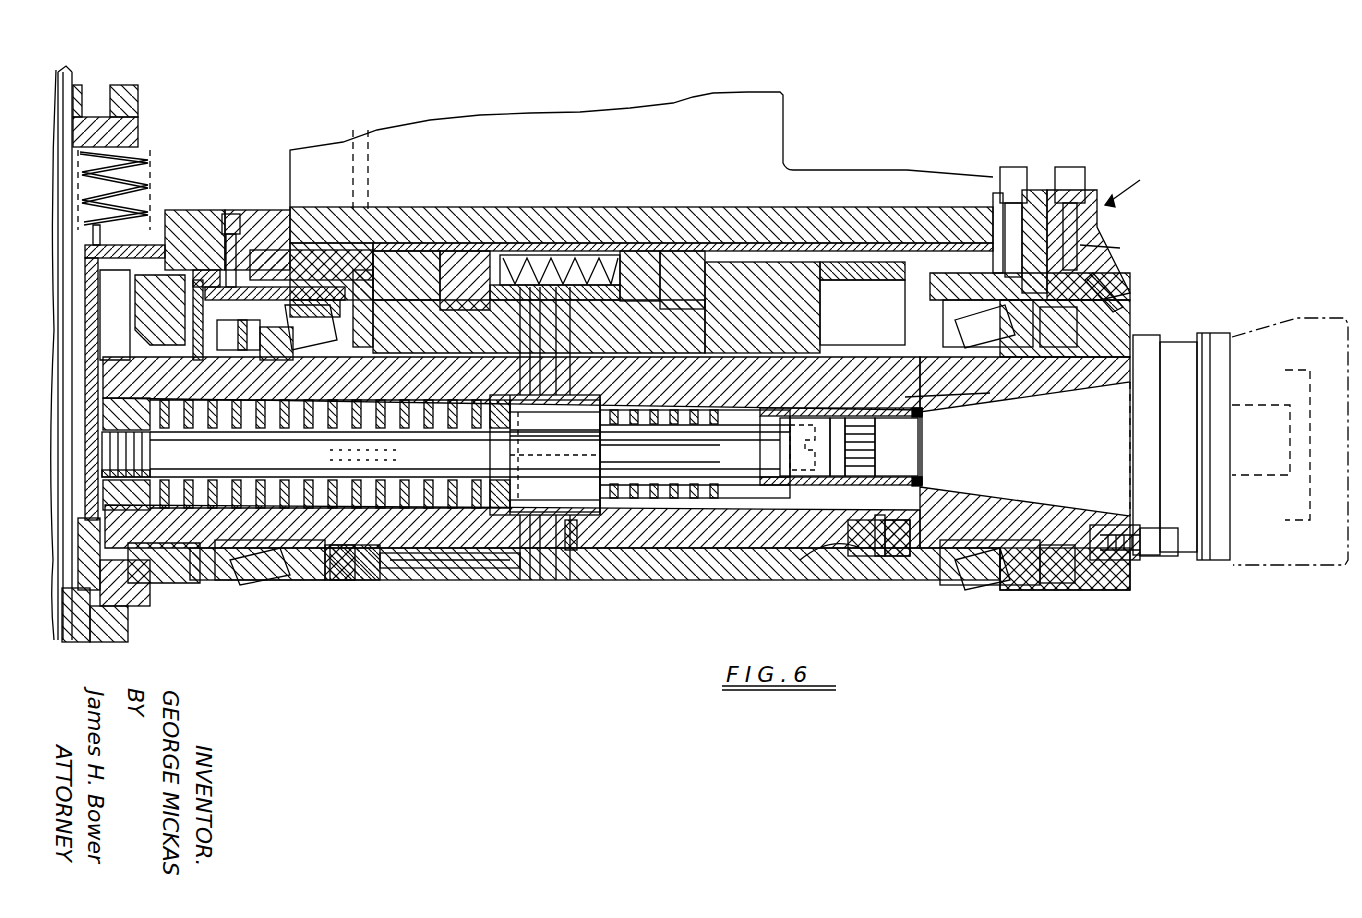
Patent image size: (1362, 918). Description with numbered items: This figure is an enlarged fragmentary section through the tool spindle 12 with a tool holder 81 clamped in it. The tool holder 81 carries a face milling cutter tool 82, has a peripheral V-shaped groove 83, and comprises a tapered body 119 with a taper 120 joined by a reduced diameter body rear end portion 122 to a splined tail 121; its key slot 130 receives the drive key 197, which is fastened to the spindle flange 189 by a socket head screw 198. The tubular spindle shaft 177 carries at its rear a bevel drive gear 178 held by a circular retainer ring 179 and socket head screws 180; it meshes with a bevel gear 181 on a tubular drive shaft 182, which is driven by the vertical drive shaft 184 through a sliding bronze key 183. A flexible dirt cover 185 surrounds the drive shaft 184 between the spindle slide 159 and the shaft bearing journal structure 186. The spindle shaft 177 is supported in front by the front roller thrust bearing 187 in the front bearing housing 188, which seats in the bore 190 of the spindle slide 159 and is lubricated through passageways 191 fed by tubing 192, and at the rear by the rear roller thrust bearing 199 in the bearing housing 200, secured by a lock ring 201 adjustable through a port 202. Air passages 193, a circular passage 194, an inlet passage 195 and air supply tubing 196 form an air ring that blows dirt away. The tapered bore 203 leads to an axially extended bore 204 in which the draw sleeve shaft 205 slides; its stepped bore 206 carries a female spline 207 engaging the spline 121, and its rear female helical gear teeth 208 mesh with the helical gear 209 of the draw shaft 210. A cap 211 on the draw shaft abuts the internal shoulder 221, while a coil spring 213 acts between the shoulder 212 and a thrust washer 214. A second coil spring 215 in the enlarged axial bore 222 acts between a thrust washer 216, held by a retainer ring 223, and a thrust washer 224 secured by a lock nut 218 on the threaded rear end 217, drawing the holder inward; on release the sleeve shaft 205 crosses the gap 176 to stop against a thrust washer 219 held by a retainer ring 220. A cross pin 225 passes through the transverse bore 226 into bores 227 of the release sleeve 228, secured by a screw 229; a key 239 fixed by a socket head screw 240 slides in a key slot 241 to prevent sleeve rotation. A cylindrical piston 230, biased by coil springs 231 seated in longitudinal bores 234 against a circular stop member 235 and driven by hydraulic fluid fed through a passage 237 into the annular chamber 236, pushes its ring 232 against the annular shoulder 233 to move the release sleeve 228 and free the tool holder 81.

The tool spindle 12 is at (1138, 182).
The tool holder 81 is at (1215, 335).
The face milling cutter tool 82 is at (1298, 325).
The V-shaped groove 83 is at (1160, 335).
The tapered body 119 is at (1076, 449).
The taper 120 is at (990, 393).
The splined tail 121 is at (870, 450).
The body rear end portion 122 is at (910, 435).
The key slot 130 is at (1120, 490).
The spindle slide 159 is at (760, 135).
The gap 176 is at (905, 444).
The tubular spindle shaft 177 is at (690, 580).
The bevel drive gear 178 is at (190, 575).
The circular retainer ring 179 is at (120, 330).
The socket head screws 180 is at (155, 300).
The bevel gear 181 is at (140, 600).
The tubular drive shaft 182 is at (120, 640).
The bronze key 183 is at (75, 640).
The vertical drive shaft 184 is at (80, 70).
The flexible dirt cover 185 is at (148, 160).
The shaft bearing journal structure 186 is at (125, 90).
The front roller thrust bearing 187 is at (985, 585).
The front bearing housing 188 is at (1035, 215).
The spindle flange 189 is at (1098, 585).
The bore 190 is at (1003, 248).
The passageways 191 is at (1100, 215).
The tubing 192 is at (1013, 168).
The air passages 193 is at (1130, 290).
The circular passage 194 is at (1123, 300).
The inlet passage 195 is at (1120, 248).
The air supply tubing 196 is at (1070, 170).
The drive key 197 is at (1135, 560).
The socket head screw 198 is at (1160, 556).
The rear roller thrust bearing 199 is at (320, 580).
The bearing housing 200 is at (265, 250).
The lock ring 201 is at (250, 580).
The port 202 is at (232, 216).
The tapered bore 203 is at (1085, 390).
The axially extended bore 204 is at (685, 515).
The draw sleeve shaft 205 is at (800, 418).
The stepped bore 206 is at (838, 418).
The female spline 207 is at (895, 477).
The female helical gear teeth 208 is at (780, 350).
The helical gear 209 is at (590, 450).
The draw shaft 210 is at (600, 455).
The cap 211 is at (740, 520).
The shoulder 212 is at (555, 580).
The coil spring 213 is at (600, 436).
The thrust washer 214 is at (680, 460).
The second coil spring 215 is at (310, 418).
The thrust washer 216 is at (495, 438).
The threaded rear end 217 is at (145, 470).
The lock nut 218 is at (110, 540).
The thrust washer 219 is at (900, 556).
The retainer ring 220 is at (925, 482).
The internal shoulder 221 is at (770, 477).
The enlarged axial bore 222 is at (430, 568).
The retainer ring 223 is at (515, 415).
The thrust washer 224 is at (265, 465).
The cross pin 225 is at (532, 580).
The transverse bore 226 is at (545, 492).
The bores 227 is at (585, 255).
The release sleeve 228 is at (735, 265).
The screw 229 is at (405, 580).
The cylindrical piston 230 is at (445, 300).
The coil springs 231 is at (635, 253).
The ring 232 is at (480, 300).
The annular shoulder 233 is at (520, 285).
The longitudinal bores 234 is at (560, 258).
The circular stop member 235 is at (680, 253).
The annular chamber 236 is at (378, 260).
The passage 237 is at (360, 125).
The key 239 is at (858, 556).
The socket head screw 240 is at (880, 556).
The key slot 241 is at (830, 548).